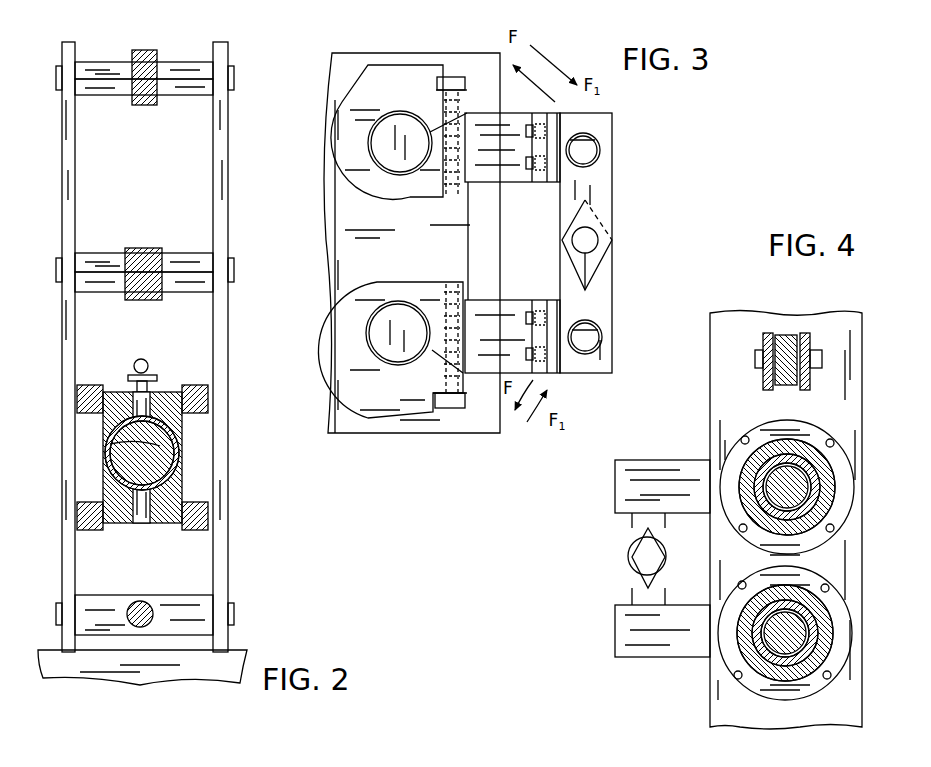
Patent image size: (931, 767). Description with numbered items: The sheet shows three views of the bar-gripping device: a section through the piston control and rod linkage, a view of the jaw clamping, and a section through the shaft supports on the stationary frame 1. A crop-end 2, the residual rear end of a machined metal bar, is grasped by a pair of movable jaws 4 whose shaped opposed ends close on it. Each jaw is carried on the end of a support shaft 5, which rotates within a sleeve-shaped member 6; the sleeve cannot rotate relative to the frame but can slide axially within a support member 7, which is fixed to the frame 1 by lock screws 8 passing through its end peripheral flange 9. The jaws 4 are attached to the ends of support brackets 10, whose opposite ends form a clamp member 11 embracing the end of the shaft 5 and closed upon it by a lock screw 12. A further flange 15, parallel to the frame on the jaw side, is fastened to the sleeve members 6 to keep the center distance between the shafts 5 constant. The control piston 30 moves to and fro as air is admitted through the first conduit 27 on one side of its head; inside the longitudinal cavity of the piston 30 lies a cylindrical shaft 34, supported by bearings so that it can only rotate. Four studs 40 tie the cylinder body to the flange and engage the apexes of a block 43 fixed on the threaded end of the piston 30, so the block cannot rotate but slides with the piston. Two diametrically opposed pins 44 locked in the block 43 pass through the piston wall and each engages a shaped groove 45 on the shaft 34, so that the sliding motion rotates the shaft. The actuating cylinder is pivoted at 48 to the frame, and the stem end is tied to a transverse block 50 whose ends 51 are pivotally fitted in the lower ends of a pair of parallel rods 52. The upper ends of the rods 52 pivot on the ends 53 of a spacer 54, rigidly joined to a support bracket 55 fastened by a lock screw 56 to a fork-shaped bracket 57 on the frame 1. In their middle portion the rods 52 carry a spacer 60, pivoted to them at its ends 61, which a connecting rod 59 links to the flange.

In FIG. 3, the stationary frame 1 is at (373, 423).
In FIG. 4, the stationary frame 1 is at (852, 360).
In FIG. 3, the crop-end 2 is at (587, 243).
In FIG. 4, the crop-end 2 is at (656, 562).
In FIG. 3, the movable jaws 4 is at (603, 177).
In FIG. 4, the movable jaws 4 is at (657, 525).
In FIG. 3, the support shaft 5 is at (400, 128).
In FIG. 4, the support shaft 5 is at (800, 482).
In FIG. 4, the sleeve-shaped member 6 is at (817, 498).
In FIG. 4, the support member 7 is at (767, 530).
In FIG. 4, the lock screws 8 is at (745, 436).
In FIG. 4, the end peripheral flange 9 is at (813, 432).
In FIG. 3, the support brackets 10 is at (512, 163).
In FIG. 3, the clamp member 11 is at (360, 130).
In FIG. 3, the lock screw 12 is at (470, 163).
In FIG. 3, the further flange 15 is at (309, 266).
In FIG. 2, the first conduit 27 is at (142, 358).
In FIG. 2, the piston 30 is at (183, 440).
In FIG. 2, the cylindrical shaft 34 is at (160, 458).
In FIG. 2, the studs 40 is at (200, 394).
In FIG. 2, the block 43 is at (170, 403).
In FIG. 2, the pins 44 is at (133, 400).
In FIG. 2, the shaped groove 45 is at (110, 444).
In FIG. 2, the pivot / stem 48 is at (138, 600).
In FIG. 2, the block 50 is at (190, 613).
In FIG. 2, the ends of block 51 is at (78, 597).
In FIG. 2, the rods 52 is at (69, 153).
In FIG. 2, the ends of spacer 53 is at (65, 58).
In FIG. 2, the spacer 54 is at (115, 68).
In FIG. 2, the support bracket 55 is at (141, 50).
In FIG. 4, the support bracket 55 is at (789, 335).
In FIG. 4, the lock screw 56 is at (758, 357).
In FIG. 4, the fork-shaped bracket 57 is at (772, 334).
In FIG. 2, the connecting rod 59 is at (147, 249).
In FIG. 2, the spacer 60 is at (190, 251).
In FIG. 2, the ends of spacer 61 is at (78, 252).